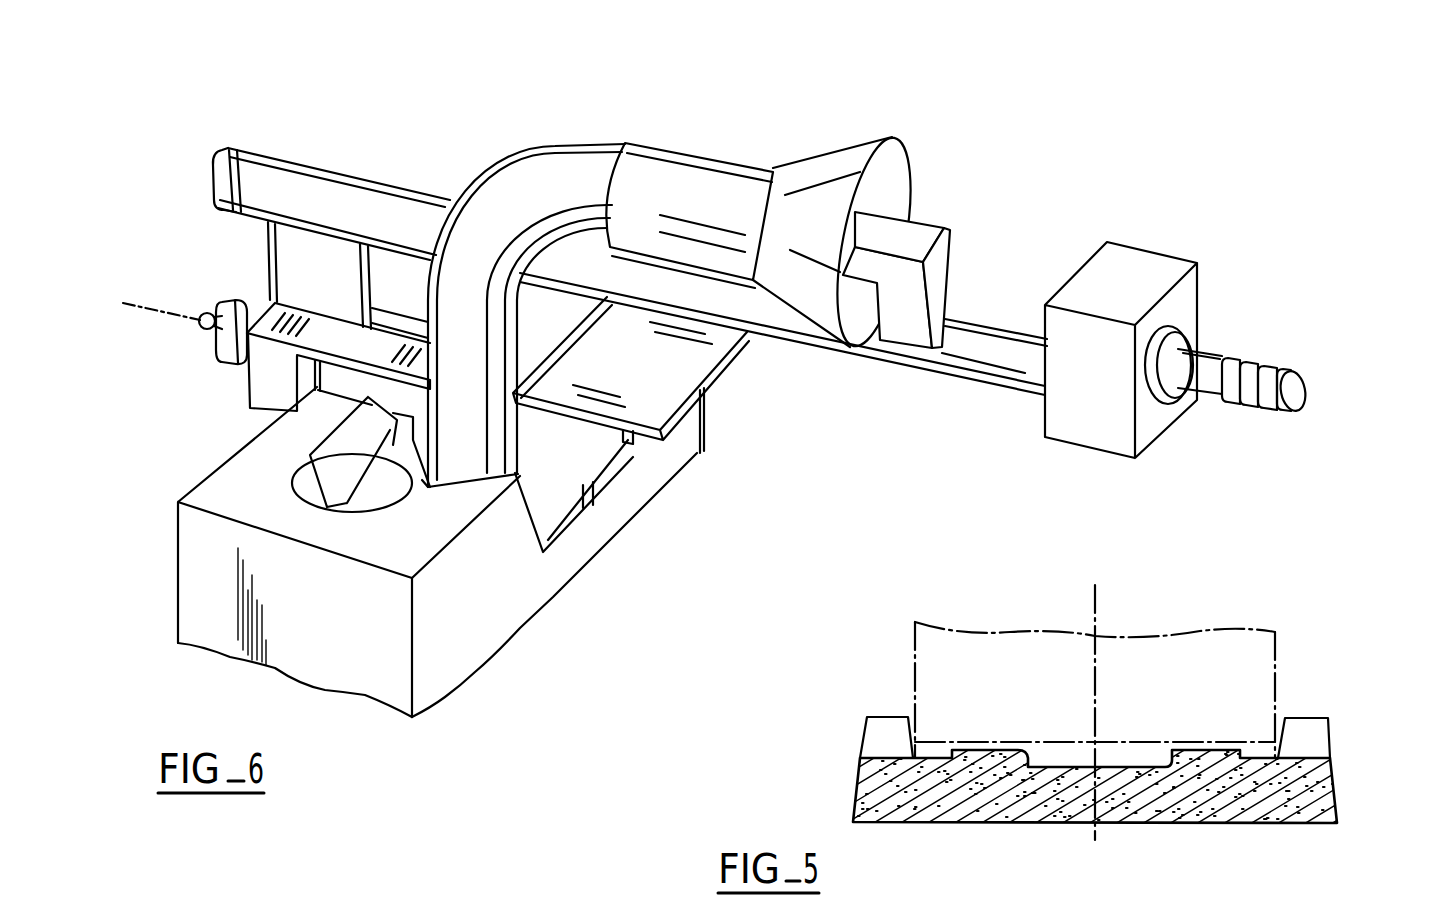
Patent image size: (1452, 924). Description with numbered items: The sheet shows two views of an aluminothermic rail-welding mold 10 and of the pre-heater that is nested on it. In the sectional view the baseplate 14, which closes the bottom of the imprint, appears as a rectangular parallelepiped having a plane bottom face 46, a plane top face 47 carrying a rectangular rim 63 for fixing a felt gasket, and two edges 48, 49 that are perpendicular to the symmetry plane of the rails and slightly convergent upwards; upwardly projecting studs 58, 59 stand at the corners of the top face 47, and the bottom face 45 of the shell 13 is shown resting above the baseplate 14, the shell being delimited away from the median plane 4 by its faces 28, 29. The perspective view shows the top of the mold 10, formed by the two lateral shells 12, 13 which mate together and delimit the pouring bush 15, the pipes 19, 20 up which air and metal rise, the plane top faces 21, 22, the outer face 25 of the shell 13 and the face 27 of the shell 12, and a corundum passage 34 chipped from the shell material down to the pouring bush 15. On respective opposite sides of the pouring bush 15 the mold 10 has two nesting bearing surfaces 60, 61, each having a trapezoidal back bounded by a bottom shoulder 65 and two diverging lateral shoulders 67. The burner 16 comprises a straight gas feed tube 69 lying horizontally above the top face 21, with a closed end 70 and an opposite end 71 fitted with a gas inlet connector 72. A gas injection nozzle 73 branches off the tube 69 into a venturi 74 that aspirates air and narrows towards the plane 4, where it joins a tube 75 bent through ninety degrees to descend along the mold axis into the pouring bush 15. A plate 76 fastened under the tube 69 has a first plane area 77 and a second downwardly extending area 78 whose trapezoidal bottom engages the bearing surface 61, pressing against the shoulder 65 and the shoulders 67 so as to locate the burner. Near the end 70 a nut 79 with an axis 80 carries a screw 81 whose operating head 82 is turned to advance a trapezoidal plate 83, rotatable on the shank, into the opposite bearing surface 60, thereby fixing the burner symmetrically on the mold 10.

In FIG. 6, the closed end 70 is at (212, 166).
In FIG. 6, the burner 16 is at (455, 185).
In FIG. 6, the tube 75 is at (594, 176).
In FIG. 6, the venturi 74 is at (892, 160).
In FIG. 6, the gas injection nozzle 73 is at (918, 232).
In FIG. 6, the top face 21 is at (530, 267).
In FIG. 6, the first plane area 77 is at (682, 342).
In FIG. 6, the gas feed tube 69 is at (988, 370).
In FIG. 6, the pipe 19 is at (553, 320).
In FIG. 6, the plate 76 is at (705, 388).
In FIG. 6, the end 71 is at (1092, 450).
In FIG. 6, the gas inlet connector 72 is at (1261, 410).
In FIG. 6, the plate 83 is at (400, 320).
In FIG. 6, the axis 80 is at (152, 310).
In FIG. 6, the screw 81 is at (240, 300).
In FIG. 6, the operating head 82 is at (220, 343).
In FIG. 6, the nesting bearing surface 60 is at (273, 403).
In FIG. 6, the nut 79 is at (257, 363).
In FIG. 6, the corundum passage 34 is at (314, 425).
In FIG. 6, the mold 10 is at (170, 617).
In FIG. 6, the pipe 20 is at (370, 500).
In FIG. 6, the plane face 25 is at (343, 663).
In FIG. 6, the top face 22 is at (445, 533).
In FIG. 6, the lateral shell 13 is at (450, 645).
In FIG. 5, the lateral shell 13 is at (1283, 677).
In FIG. 6, the plane face 29 is at (493, 623).
In FIG. 5, the plane face 29 is at (912, 670).
In FIG. 6, the nesting bearing surface 61 is at (552, 592).
In FIG. 6, the pouring bush 15 is at (473, 442).
In FIG. 6, the second area 78 is at (543, 478).
In FIG. 6, the lateral shoulders 67 is at (637, 447).
In FIG. 6, the lateral shell 12 is at (690, 452).
In FIG. 6, the bottom shoulder 65 is at (597, 527).
In FIG. 6, the plane face 27 is at (630, 490).
In FIG. 5, the baseplate 14 is at (1343, 777).
In FIG. 5, the stud 59 is at (878, 740).
In FIG. 5, the stud 58 is at (1313, 737).
In FIG. 5, the rectangular rim 63 is at (997, 753).
In FIG. 5, the edge 49 is at (855, 800).
In FIG. 5, the edge 48 is at (1335, 810).
In FIG. 5, the bottom face 45 is at (930, 735).
In FIG. 5, the bottom face 46 is at (1013, 823).
In FIG. 5, the top face 47 is at (1123, 768).
In FIG. 5, the plane face 28 is at (1280, 643).
In FIG. 5, the median plane 4 is at (1097, 600).